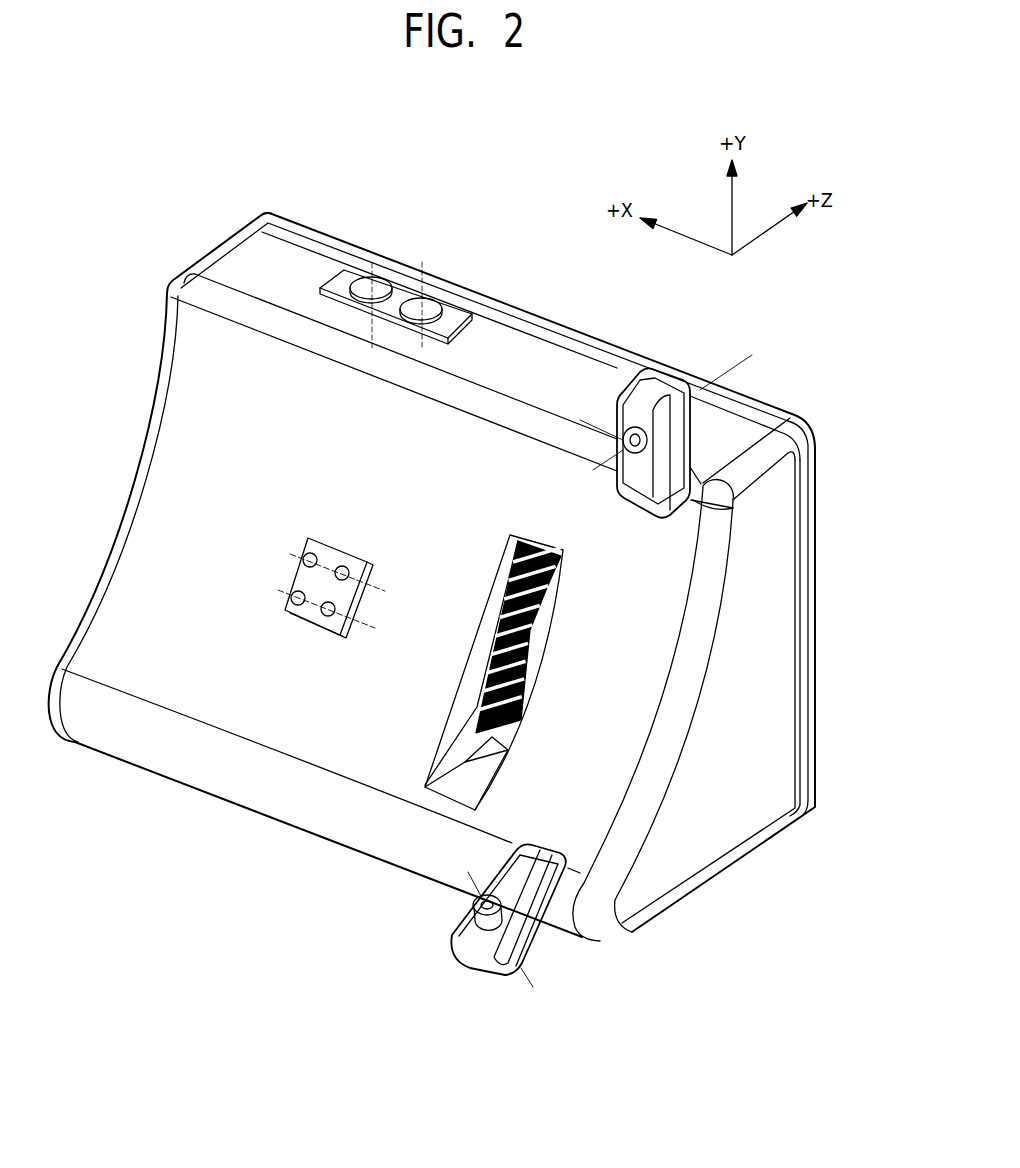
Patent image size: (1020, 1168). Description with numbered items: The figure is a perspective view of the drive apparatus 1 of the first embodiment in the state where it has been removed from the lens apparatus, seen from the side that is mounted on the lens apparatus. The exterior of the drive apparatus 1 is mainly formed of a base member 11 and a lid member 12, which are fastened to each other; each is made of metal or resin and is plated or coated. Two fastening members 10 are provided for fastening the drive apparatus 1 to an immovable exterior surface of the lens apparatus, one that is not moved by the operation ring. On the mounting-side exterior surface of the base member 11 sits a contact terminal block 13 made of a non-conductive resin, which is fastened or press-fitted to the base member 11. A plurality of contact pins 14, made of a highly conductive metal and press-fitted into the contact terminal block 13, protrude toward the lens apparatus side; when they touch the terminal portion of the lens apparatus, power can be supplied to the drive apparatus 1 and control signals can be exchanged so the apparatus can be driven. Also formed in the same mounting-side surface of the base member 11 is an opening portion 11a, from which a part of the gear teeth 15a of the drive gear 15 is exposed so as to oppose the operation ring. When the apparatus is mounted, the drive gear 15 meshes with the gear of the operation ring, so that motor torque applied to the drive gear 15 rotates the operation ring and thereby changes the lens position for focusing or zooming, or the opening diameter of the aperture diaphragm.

The drive apparatus 1 is at (110, 141).
The fastening members 10 is at (627, 447).
The base member 11 is at (177, 455).
The opening portion 11a is at (510, 748).
The lid member 12 is at (805, 478).
The contact terminal block 13 is at (305, 582).
The contact pins 14 is at (287, 610).
The drive gear 15 is at (538, 622).
The gear teeth 15a is at (513, 663).